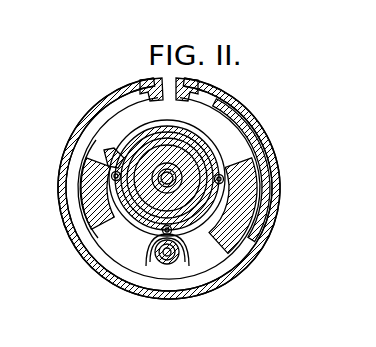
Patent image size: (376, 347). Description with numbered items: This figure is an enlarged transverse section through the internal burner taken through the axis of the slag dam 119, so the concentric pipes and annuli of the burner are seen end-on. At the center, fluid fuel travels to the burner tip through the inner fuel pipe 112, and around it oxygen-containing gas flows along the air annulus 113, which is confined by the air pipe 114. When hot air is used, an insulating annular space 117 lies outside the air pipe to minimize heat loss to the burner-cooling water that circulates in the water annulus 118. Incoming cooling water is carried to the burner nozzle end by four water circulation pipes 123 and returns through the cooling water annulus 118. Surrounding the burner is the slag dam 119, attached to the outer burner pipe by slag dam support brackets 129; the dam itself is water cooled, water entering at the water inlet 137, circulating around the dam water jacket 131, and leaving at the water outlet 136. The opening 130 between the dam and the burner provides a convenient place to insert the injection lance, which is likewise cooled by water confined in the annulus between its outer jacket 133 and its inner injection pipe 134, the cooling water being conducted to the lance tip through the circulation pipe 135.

The inner fuel pipe 112 is at (232, 122).
The air annulus 113 is at (185, 182).
The air pipe 114 is at (230, 205).
The insulating annular space 117 is at (118, 148).
The water annulus 118 is at (108, 152).
The slag dam 119 is at (252, 252).
The water circulation pipes 123 is at (95, 197).
The slag dam support brackets 129 is at (224, 183).
The opening 130 is at (95, 222).
The dam water jacket 131 is at (85, 262).
The outer jacket 133 is at (165, 264).
The inner injection pipe 134 is at (187, 247).
The circulation pipe 135 is at (143, 263).
The water outlet 136 is at (158, 88).
The water inlet 137 is at (192, 84).